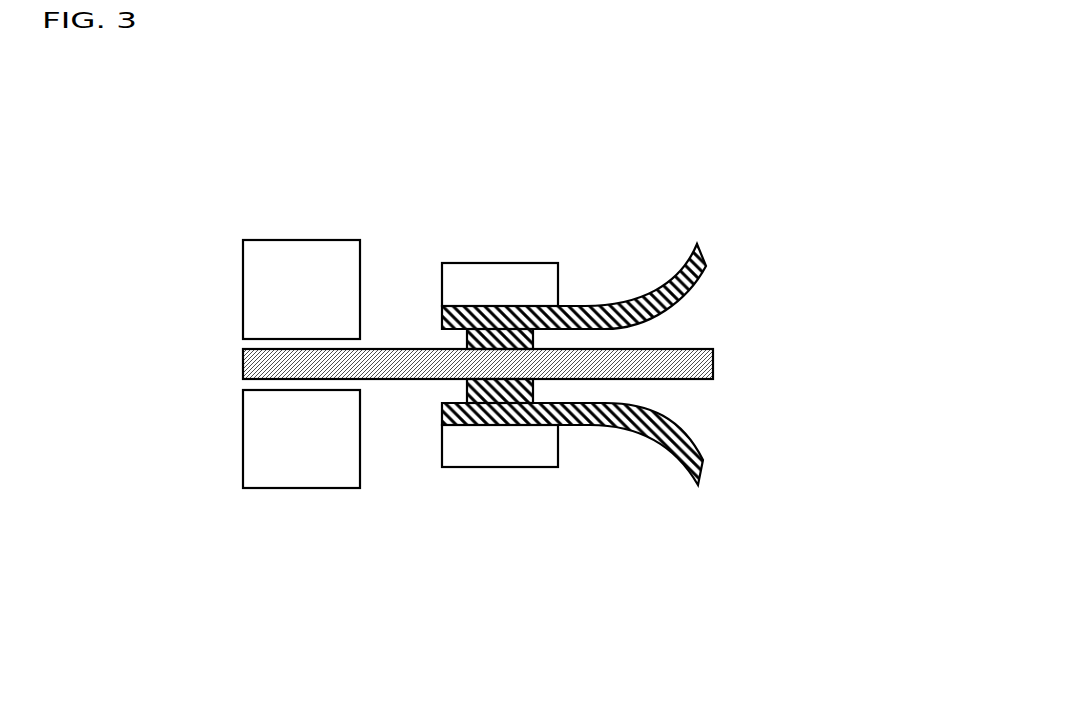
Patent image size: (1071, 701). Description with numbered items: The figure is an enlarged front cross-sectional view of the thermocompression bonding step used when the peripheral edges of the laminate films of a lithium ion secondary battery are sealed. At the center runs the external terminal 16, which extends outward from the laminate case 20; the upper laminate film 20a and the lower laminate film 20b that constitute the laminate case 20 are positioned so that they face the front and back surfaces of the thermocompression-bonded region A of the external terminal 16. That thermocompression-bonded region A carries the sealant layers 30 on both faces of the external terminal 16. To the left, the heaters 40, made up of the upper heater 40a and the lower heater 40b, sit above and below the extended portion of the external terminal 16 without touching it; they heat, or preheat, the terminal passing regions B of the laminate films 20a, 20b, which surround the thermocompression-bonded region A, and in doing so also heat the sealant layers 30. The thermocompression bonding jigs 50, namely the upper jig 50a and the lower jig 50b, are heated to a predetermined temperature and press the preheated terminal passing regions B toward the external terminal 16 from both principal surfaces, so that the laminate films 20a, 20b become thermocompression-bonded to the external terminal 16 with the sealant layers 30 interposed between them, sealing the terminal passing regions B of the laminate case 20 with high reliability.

The external terminal 16 is at (397, 382).
The laminate case 20 is at (585, 348).
The laminate film 20a is at (674, 263).
The laminate film 20b is at (662, 448).
The sealant layer 30 is at (533, 341).
The heater 40 is at (269, 239).
The heater 40a is at (335, 240).
The heater 40b is at (310, 488).
The thermocompression bonding jig 50 is at (453, 217).
The thermocompression bonding jig 50a is at (537, 262).
The thermocompression bonding jig 50b is at (522, 467).
The thermocompression-bonded region A is at (491, 333).
The terminal passing region B is at (470, 427).